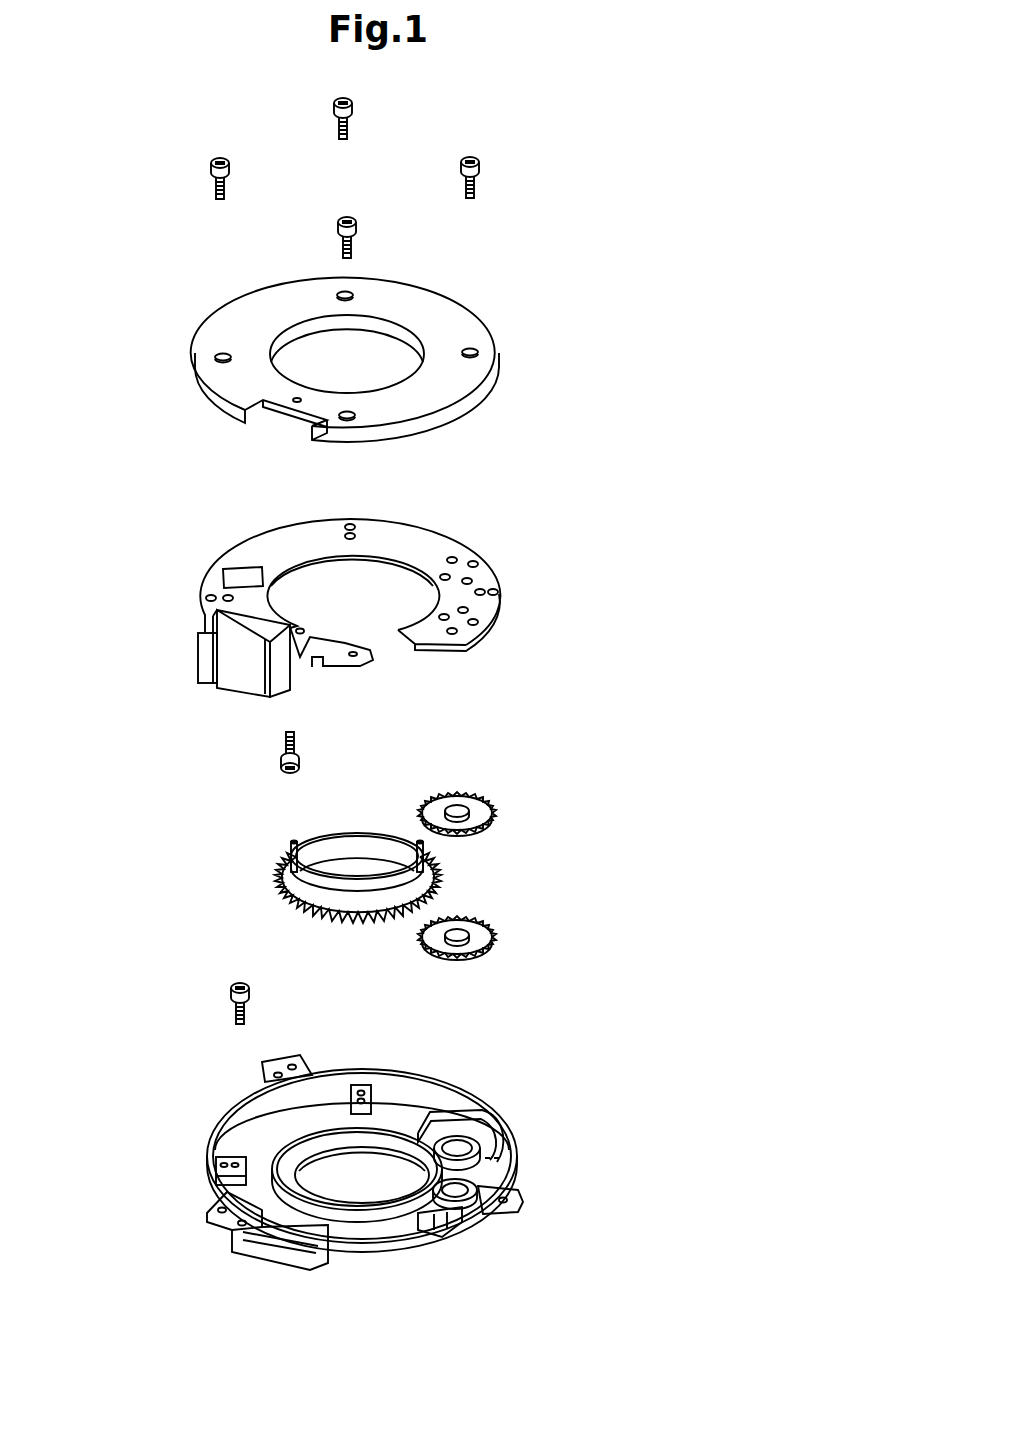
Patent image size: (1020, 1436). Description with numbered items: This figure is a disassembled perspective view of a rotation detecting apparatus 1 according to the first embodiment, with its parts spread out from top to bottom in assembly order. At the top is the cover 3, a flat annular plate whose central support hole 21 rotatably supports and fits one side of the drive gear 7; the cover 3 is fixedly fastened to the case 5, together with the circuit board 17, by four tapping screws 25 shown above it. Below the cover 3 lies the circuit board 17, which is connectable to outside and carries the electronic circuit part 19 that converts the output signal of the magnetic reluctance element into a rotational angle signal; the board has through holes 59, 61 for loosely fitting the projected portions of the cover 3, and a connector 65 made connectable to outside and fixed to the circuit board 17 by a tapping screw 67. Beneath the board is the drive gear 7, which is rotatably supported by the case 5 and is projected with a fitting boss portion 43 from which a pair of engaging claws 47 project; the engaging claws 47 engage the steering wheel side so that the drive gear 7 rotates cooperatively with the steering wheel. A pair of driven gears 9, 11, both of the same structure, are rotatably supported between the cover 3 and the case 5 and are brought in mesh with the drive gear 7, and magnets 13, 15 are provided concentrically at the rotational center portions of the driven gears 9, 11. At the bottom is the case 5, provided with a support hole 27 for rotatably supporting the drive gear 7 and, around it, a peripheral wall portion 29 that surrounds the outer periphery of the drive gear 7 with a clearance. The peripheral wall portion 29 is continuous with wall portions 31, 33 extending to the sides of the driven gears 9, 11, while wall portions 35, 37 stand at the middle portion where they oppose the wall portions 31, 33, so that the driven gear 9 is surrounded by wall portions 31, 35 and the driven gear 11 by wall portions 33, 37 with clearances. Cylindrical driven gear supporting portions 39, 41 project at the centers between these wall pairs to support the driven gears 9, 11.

The rotation detecting apparatus 1 is at (594, 195).
The cover 3 is at (351, 343).
The case 5 is at (382, 1165).
The drive gear 7 is at (349, 847).
The driven gear 9 is at (483, 914).
The driven gear 11 is at (492, 782).
The magnet 13 is at (462, 930).
The magnet 15 is at (458, 806).
The circuit board 17 is at (360, 614).
The electronic circuit part 19 is at (225, 566).
The support hole 21 is at (300, 330).
The tapping screws 25 is at (352, 120).
The support hole 27 is at (310, 1156).
The peripheral wall portion 29 is at (230, 1162).
The wall portion 31 is at (417, 1204).
The wall portion 33 is at (445, 1108).
The wall portion 35 is at (485, 1175).
The wall portion 37 is at (497, 1147).
The driven gear supporting portion 39 is at (465, 1207).
The driven gear supporting portion 41 is at (493, 1132).
The fitting boss portion 43 is at (343, 833).
The engaging claws 47 is at (291, 842).
The through holes 59 is at (478, 618).
The through holes 61 is at (475, 565).
The connector 65 is at (236, 684).
The tapping screw 67 is at (300, 752).